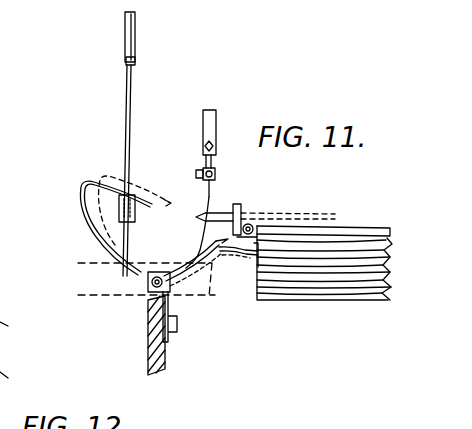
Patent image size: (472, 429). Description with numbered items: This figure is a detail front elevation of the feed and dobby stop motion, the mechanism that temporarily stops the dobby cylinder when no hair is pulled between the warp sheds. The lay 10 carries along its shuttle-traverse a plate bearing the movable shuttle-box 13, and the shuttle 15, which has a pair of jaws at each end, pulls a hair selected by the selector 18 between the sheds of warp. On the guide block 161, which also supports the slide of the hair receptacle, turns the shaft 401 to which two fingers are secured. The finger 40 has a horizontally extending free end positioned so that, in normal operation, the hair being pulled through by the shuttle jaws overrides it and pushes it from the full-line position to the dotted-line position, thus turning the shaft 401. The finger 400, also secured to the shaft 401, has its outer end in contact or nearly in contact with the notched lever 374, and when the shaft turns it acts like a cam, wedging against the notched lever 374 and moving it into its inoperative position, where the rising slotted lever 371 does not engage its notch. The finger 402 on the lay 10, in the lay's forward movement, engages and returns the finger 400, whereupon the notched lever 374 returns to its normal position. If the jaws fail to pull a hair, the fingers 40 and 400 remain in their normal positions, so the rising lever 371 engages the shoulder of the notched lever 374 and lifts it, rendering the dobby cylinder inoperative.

The notched lever 374 is at (127, 140).
The lever 371 is at (137, 205).
The finger 400 is at (97, 228).
The shaft 401 is at (150, 289).
The guide block 161 is at (148, 341).
The selector 18 is at (211, 189).
The finger 40 is at (211, 270).
The finger 402 is at (258, 250).
The shuttle 15 is at (247, 212).
The movable shuttle-box 13 is at (340, 225).
The lay 10 is at (345, 278).